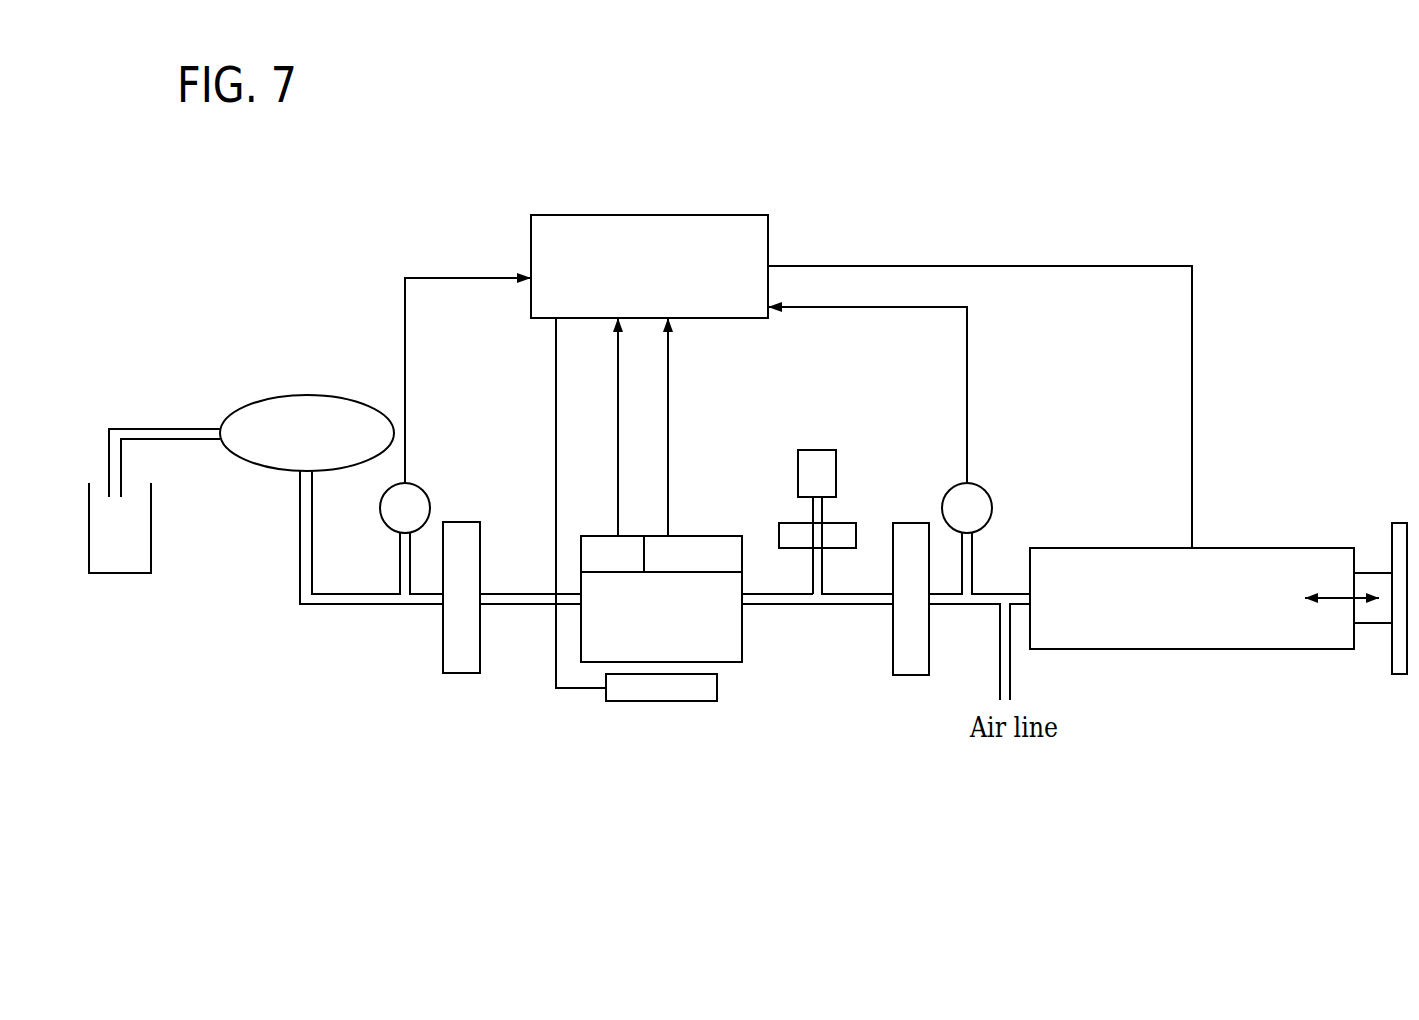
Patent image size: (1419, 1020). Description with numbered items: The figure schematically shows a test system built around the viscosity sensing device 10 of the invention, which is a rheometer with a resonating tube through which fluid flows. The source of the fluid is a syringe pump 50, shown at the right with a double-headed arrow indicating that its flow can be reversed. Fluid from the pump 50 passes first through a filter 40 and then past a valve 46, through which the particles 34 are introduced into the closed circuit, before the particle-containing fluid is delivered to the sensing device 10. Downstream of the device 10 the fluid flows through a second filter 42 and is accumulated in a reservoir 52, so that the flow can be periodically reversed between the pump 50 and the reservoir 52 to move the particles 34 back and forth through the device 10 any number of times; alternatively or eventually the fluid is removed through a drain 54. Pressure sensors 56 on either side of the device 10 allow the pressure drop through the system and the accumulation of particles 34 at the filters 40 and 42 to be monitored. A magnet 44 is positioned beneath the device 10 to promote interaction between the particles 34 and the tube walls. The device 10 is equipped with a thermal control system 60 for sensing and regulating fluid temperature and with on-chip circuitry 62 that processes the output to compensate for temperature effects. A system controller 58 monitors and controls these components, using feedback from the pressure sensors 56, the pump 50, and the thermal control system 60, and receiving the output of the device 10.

The sensing device 10 is at (702, 626).
The particles 34 is at (820, 463).
The filter 40 is at (905, 653).
The second filter 42 is at (453, 647).
The magnet 44 is at (658, 688).
The valve 46 is at (793, 533).
The syringe pump 50 is at (1138, 637).
The reservoir 52 is at (308, 410).
The drain 54 is at (113, 553).
The pressure sensors 56 is at (411, 489).
The system controller 58 is at (634, 232).
The thermal control system 60 is at (603, 548).
The on-chip circuitry 62 is at (717, 553).